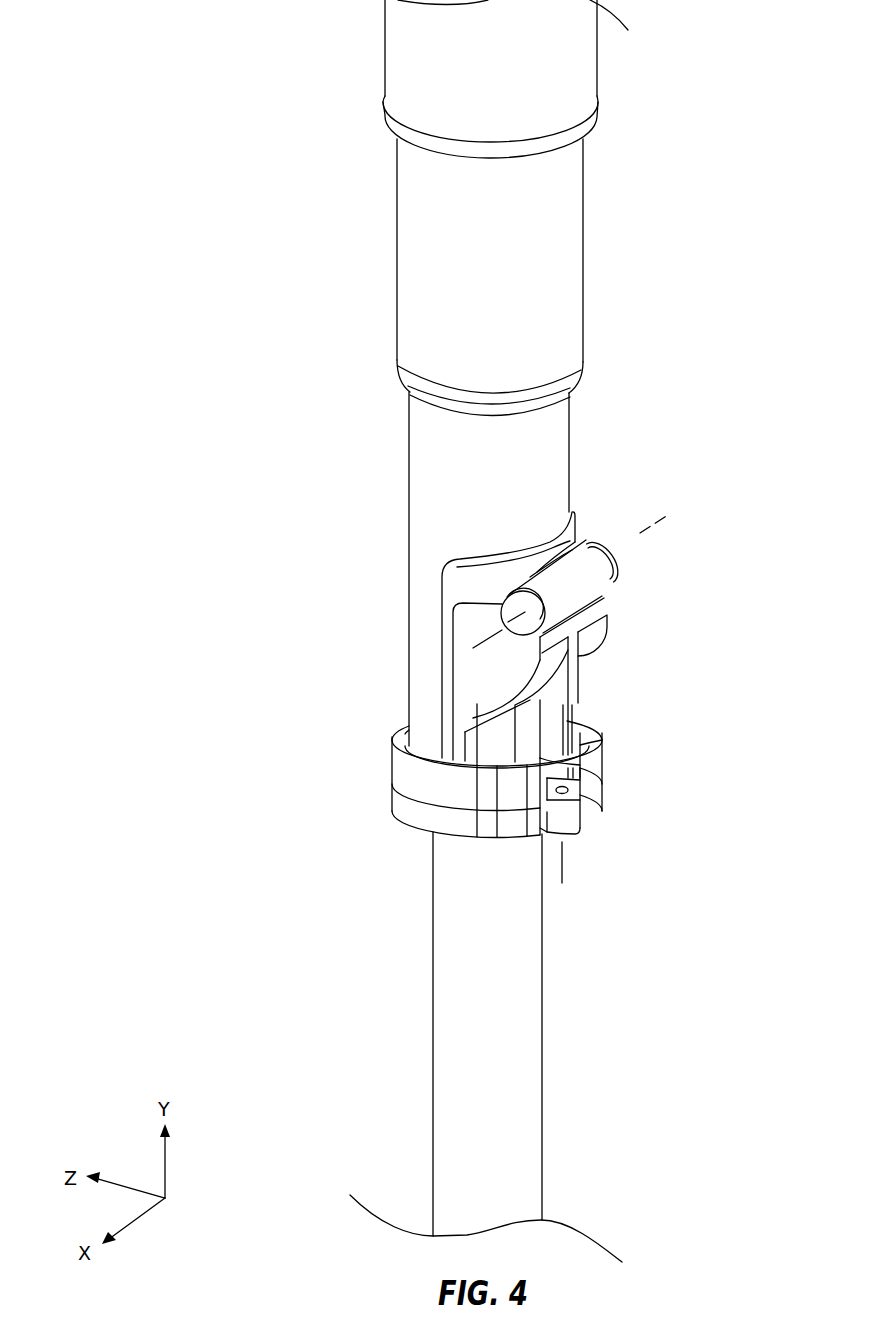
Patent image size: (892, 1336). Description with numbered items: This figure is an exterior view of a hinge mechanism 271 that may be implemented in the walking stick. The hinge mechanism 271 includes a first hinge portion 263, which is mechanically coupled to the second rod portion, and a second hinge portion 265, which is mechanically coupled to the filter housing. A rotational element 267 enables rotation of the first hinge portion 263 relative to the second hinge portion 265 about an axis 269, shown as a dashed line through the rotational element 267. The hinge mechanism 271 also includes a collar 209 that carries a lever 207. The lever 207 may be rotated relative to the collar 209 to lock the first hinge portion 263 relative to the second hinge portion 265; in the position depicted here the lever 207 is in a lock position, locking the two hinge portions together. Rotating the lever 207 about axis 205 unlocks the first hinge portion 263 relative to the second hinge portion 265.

The axis 205 is at (563, 877).
The lever 207 is at (592, 797).
The collar 209 is at (575, 823).
The first hinge portion 263 is at (595, 632).
The second hinge portion 265 is at (577, 532).
The rotational element 267 is at (618, 570).
The axis 269 is at (640, 540).
The hinge mechanism 271 is at (712, 617).